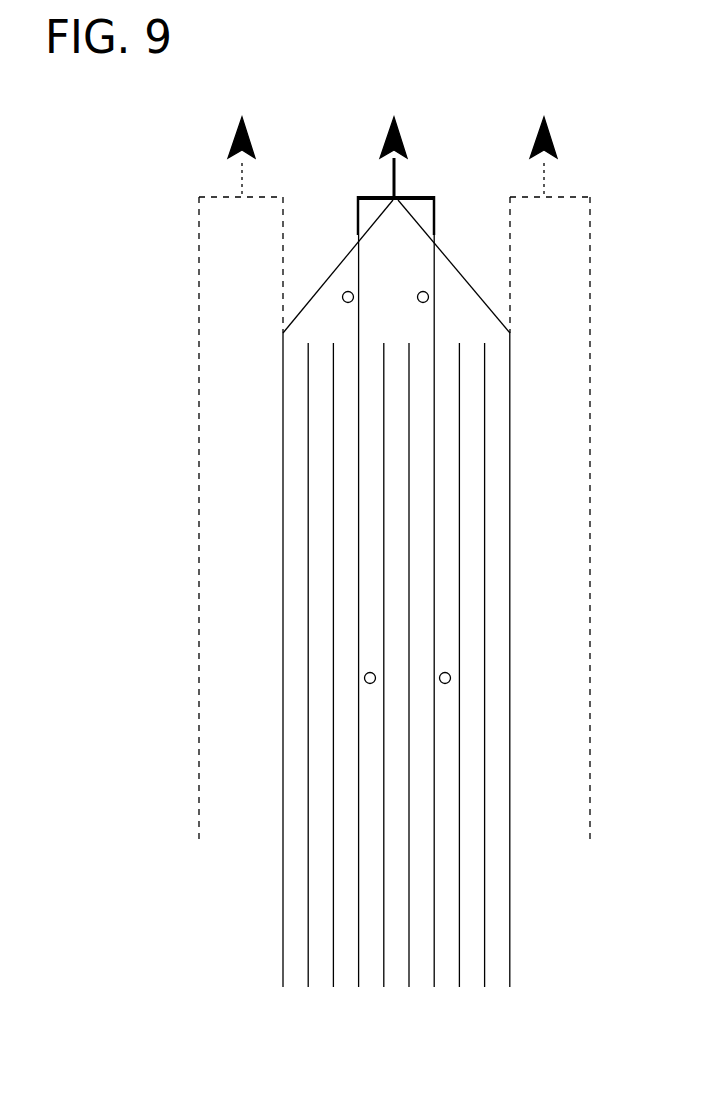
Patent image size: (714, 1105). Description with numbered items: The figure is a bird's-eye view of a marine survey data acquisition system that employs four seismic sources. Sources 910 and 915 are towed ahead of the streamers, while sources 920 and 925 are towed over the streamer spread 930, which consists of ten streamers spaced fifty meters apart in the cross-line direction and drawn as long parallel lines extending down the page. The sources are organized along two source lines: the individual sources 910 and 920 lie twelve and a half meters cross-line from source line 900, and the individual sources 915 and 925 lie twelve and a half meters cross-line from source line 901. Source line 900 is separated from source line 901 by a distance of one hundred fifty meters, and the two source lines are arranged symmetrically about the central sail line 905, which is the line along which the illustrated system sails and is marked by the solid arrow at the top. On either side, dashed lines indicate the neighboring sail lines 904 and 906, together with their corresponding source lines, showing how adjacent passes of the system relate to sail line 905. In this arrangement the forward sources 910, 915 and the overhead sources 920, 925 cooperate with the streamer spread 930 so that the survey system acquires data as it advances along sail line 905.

The source line 900 is at (357, 215).
The source line 901 is at (435, 215).
The sail line 904 is at (249, 136).
The sail line 905 is at (401, 136).
The sail line 906 is at (551, 136).
The source 910 is at (342, 298).
The source 915 is at (429, 299).
The source 920 is at (365, 683).
The source 925 is at (450, 683).
The streamer spread 930 is at (313, 600).